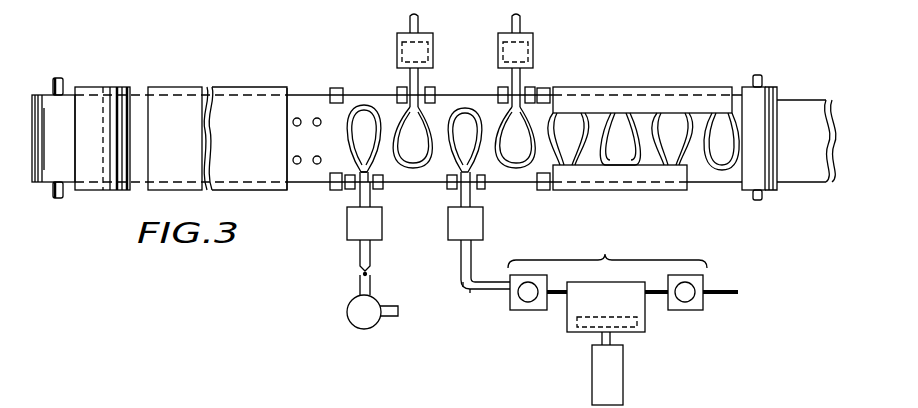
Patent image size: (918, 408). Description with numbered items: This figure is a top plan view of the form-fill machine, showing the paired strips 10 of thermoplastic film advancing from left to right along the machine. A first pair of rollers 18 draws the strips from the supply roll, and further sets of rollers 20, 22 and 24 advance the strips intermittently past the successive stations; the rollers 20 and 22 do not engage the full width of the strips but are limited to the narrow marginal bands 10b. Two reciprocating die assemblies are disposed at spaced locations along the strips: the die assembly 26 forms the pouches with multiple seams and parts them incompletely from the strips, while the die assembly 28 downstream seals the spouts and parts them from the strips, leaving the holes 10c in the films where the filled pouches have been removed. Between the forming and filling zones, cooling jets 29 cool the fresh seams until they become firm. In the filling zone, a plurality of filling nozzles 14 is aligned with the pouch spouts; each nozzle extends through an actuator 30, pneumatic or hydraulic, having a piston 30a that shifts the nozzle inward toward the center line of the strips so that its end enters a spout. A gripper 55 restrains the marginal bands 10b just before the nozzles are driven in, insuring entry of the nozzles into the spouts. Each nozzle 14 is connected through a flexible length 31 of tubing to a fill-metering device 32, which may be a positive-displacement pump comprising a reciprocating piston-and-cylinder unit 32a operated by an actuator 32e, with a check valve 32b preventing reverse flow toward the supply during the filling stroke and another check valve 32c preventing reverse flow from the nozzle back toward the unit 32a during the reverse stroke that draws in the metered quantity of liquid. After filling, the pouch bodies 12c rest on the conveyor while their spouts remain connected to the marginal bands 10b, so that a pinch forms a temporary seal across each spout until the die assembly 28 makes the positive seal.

The strips 10 is at (137, 97).
The marginal bands 10b is at (458, 104).
The holes 10c is at (786, 118).
The pouch bodies 12c is at (400, 135).
The filling nozzles 14 is at (420, 95).
The first pair of rollers 18 is at (93, 97).
The rollers 20 is at (337, 88).
The rollers 22 is at (543, 88).
The rollers 24 is at (745, 100).
The die assembly 26 is at (235, 97).
The die assembly 28 is at (652, 74).
The cooling jets 29 is at (316, 156).
The actuators 30 is at (397, 45).
The piston 30a is at (434, 38).
The flexible length of tubing 31 is at (462, 282).
The fill-metering device 32 is at (372, 305).
The piston-and-cylinder unit 32a is at (645, 322).
The check valve 32b is at (700, 310).
The check valve 32c is at (522, 308).
The actuator 32e is at (623, 376).
The gripper 55 is at (447, 188).